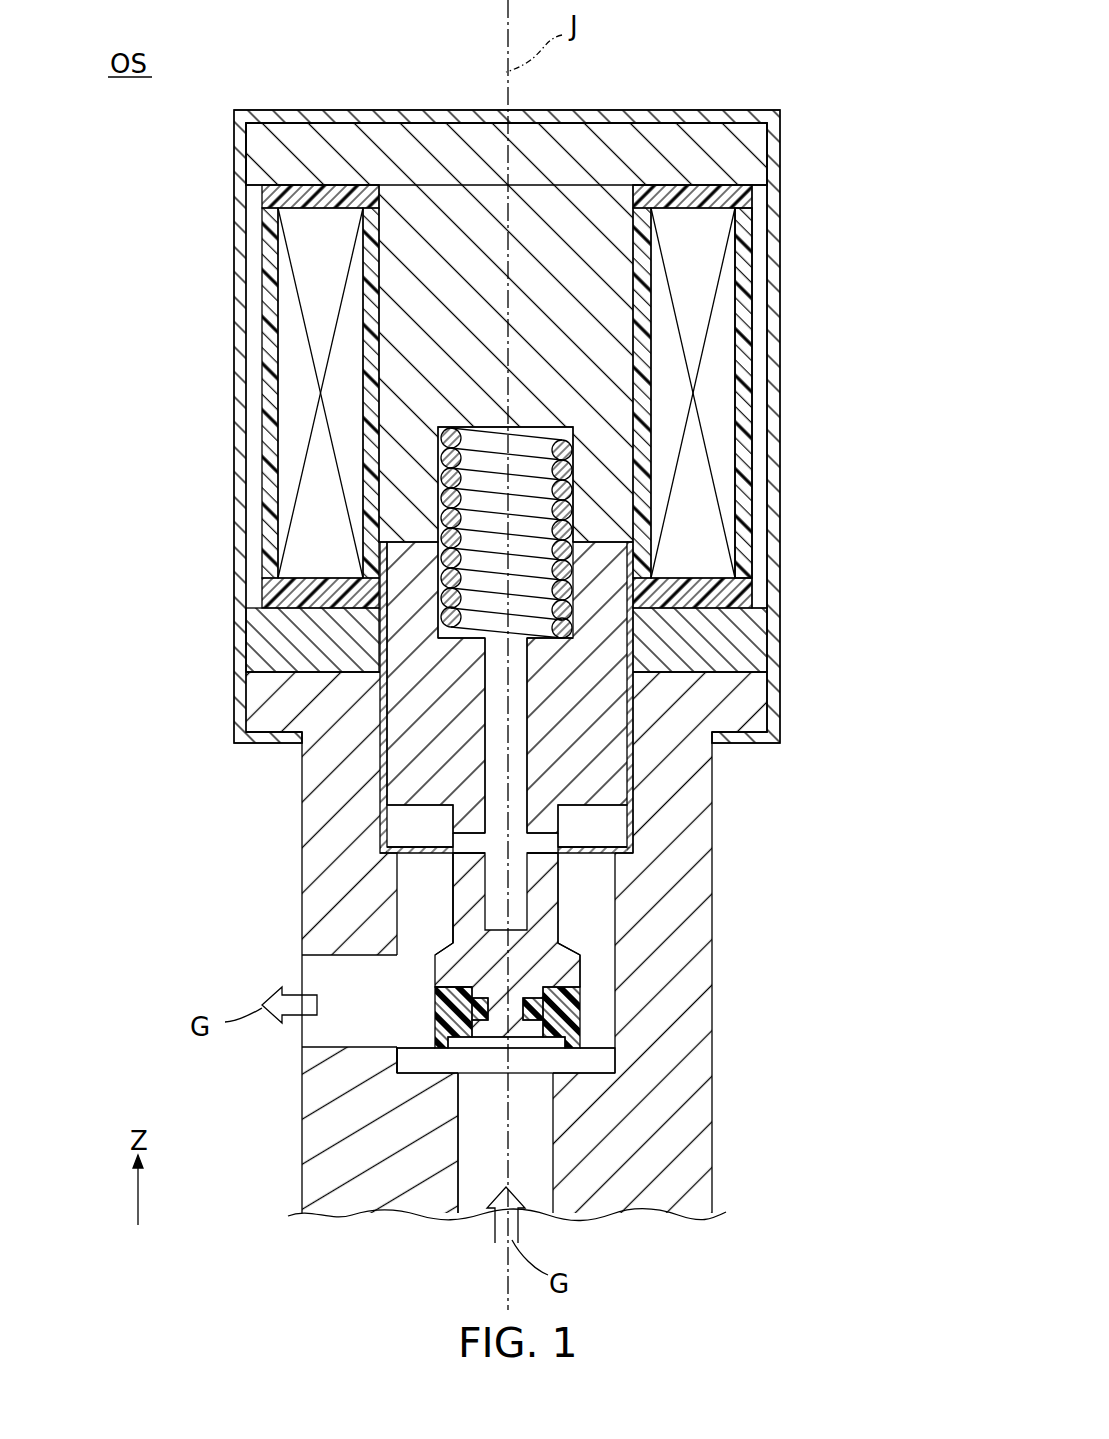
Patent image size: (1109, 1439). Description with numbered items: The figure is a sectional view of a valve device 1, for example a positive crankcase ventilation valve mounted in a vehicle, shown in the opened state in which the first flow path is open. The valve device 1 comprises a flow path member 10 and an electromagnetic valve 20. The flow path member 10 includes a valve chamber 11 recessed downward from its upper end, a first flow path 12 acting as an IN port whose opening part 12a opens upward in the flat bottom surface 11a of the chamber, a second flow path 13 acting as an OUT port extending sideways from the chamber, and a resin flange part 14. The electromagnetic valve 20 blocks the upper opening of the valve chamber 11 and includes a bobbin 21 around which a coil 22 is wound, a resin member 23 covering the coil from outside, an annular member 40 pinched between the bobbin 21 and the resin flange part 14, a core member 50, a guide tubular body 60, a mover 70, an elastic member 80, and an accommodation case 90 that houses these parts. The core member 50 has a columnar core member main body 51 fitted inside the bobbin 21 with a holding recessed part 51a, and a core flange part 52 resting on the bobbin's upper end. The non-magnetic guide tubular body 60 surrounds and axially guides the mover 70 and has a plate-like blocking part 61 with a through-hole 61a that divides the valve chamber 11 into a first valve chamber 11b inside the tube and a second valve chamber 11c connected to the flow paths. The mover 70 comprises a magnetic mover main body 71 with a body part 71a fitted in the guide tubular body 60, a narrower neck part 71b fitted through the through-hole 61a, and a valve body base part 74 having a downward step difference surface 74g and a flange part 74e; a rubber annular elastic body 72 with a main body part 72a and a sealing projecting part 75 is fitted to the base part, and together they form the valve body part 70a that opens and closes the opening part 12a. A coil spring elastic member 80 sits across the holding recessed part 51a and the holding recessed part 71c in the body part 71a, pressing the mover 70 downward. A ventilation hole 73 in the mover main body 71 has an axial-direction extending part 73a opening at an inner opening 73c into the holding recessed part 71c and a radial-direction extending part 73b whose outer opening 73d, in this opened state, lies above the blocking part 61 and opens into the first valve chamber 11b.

The valve device 1 is at (814, 72).
The flow path member 10 is at (720, 880).
The valve chamber 11 is at (615, 1016).
The bottom surface 11a is at (442, 1040).
The first valve chamber 11b is at (590, 700).
The second valve chamber 11c is at (583, 1057).
The first flow path 12 is at (540, 1207).
The opening part 12a is at (463, 1080).
The second flow path 13 is at (300, 962).
The resin flange part 14 is at (750, 690).
The electromagnetic valve 20 is at (790, 163).
The bobbin 21 is at (700, 330).
The coil 22 is at (700, 290).
The resin member 23 is at (745, 253).
The annular member 40 is at (735, 628).
The core member 50 is at (455, 281).
The core member main body 51 is at (443, 198).
The holding recessed part 51a is at (448, 497).
The core flange part 52 is at (360, 128).
The guide tubular body 60 is at (630, 773).
The blocking part 61 is at (572, 913).
The through-hole 61a is at (455, 850).
The mover 70 is at (524, 1061).
The valve body part 70a is at (590, 970).
The mover main body 71 is at (592, 850).
The body part 71a is at (427, 713).
The neck part 71b is at (463, 898).
The holding recessed part 71c is at (445, 612).
The annular elastic body 72 is at (590, 1007).
The main body part 72a is at (448, 987).
The ventilation hole 73 is at (520, 680).
The axial-direction extending part 73a is at (530, 722).
The radial-direction extending part 73b is at (445, 841).
The inner opening 73c is at (488, 622).
The outer opening 73d is at (442, 841).
The valve body base part 74 is at (445, 968).
The flange part 74e is at (530, 1030).
The step difference surface 74g is at (447, 1015).
The sealing projecting part 75 is at (405, 1070).
The elastic member 80 is at (572, 490).
The accommodation case 90 is at (765, 420).